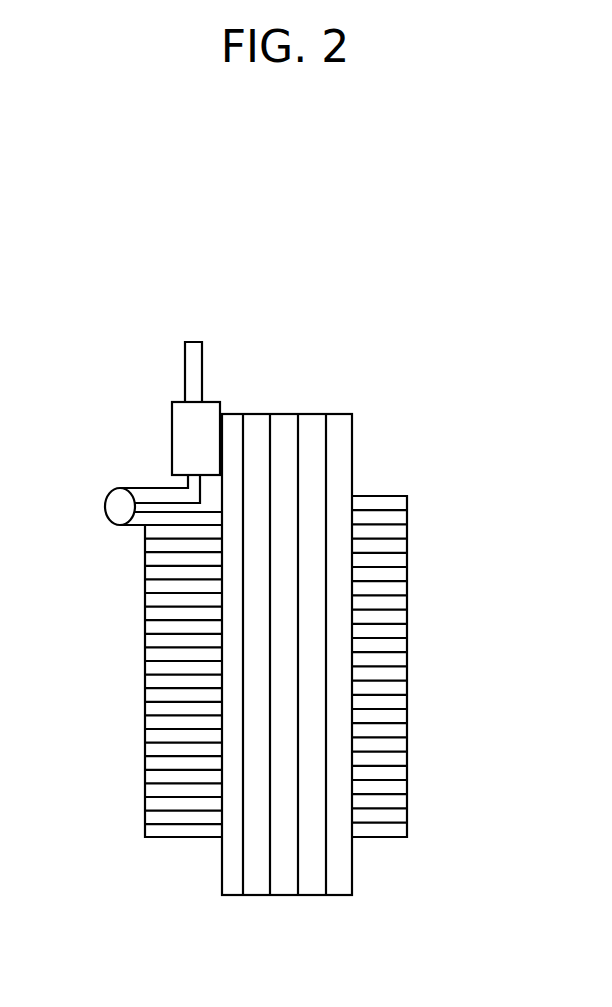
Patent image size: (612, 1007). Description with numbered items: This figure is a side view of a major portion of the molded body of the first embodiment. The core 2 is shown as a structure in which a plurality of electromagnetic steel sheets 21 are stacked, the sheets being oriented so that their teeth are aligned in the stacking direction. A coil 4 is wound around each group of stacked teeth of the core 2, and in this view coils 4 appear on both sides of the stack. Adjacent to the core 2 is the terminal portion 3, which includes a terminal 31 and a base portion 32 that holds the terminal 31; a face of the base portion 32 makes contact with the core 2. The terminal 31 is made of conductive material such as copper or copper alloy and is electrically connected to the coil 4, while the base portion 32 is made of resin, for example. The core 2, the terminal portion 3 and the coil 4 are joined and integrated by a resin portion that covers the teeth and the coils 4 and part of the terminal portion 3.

The core 2 is at (228, 317).
The electromagnetic steel sheet 21 is at (232, 422).
The terminal portion 3 is at (102, 275).
The terminal 31 is at (193, 352).
The base portion 32 is at (172, 418).
The coil 4 is at (152, 801).